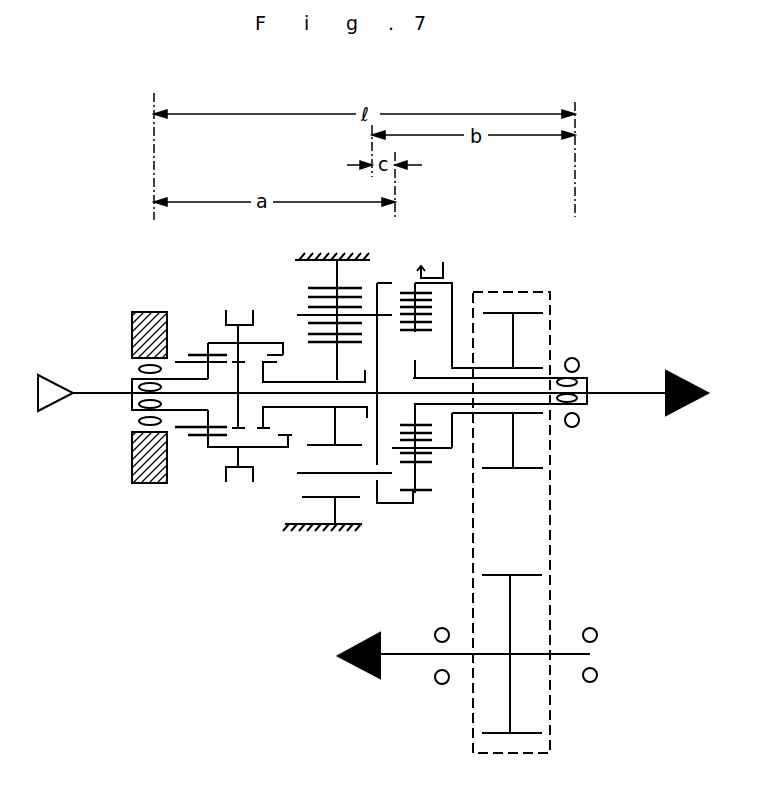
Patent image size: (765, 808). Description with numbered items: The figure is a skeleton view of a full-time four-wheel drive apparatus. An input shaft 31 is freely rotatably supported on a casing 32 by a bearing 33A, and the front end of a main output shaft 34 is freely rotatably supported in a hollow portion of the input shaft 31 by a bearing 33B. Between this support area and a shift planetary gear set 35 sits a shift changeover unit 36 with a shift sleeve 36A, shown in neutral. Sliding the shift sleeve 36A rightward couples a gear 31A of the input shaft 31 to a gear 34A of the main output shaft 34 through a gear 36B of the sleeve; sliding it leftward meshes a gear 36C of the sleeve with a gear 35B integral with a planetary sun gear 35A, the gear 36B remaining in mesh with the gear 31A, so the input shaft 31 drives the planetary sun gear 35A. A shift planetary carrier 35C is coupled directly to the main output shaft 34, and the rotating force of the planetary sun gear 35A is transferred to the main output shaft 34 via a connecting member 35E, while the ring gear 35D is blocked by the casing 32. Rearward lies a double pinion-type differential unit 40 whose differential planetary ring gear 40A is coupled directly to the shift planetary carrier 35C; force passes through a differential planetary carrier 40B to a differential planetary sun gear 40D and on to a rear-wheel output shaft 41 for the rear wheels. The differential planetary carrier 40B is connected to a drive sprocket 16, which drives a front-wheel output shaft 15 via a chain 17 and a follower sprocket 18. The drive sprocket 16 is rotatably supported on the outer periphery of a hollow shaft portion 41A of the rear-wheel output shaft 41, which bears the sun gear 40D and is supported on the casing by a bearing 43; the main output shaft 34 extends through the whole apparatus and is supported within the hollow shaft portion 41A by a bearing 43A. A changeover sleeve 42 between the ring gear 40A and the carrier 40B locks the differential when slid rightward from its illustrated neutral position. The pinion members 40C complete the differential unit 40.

The front-wheel output shaft 15 is at (402, 652).
The drive sprocket 16 is at (533, 303).
The chain 17 is at (550, 535).
The follower sprocket 18 is at (535, 737).
The input shaft 31 is at (95, 390).
The gear of the input shaft 31A is at (182, 360).
The casing 32 is at (136, 311).
The bearing 33A is at (140, 366).
The bearing 33B is at (132, 382).
The main output shaft 34 is at (428, 390).
The gear of the main output shaft 34A is at (198, 445).
The shift planetary gear set 35 is at (368, 275).
The planetary sun gear 35A is at (382, 370).
The gear integral with the planetary sun gear 35B is at (312, 394).
The shift planetary carrier 35C is at (303, 308).
The ring gear of the shift planetary gear set 35D is at (335, 279).
The connecting member 35E is at (483, 398).
The shift changeover unit 36 is at (215, 325).
The shift sleeve 36A is at (243, 338).
The gear of the sleeve 36B is at (200, 352).
The gear of the sleeve 36C is at (277, 356).
The differential unit 40 is at (462, 264).
The differential planetary ring gear 40A is at (387, 281).
The differential planetary carrier 40B is at (440, 312).
The clutch plates 40C is at (432, 470).
The differential planetary sun gear 40D is at (415, 366).
The rear-wheel output shaft 41 is at (612, 388).
The hollow shaft portion 41A is at (547, 405).
The changeover sleeve 42 is at (434, 258).
The bearing 43 is at (579, 356).
The bearing 43A is at (590, 405).